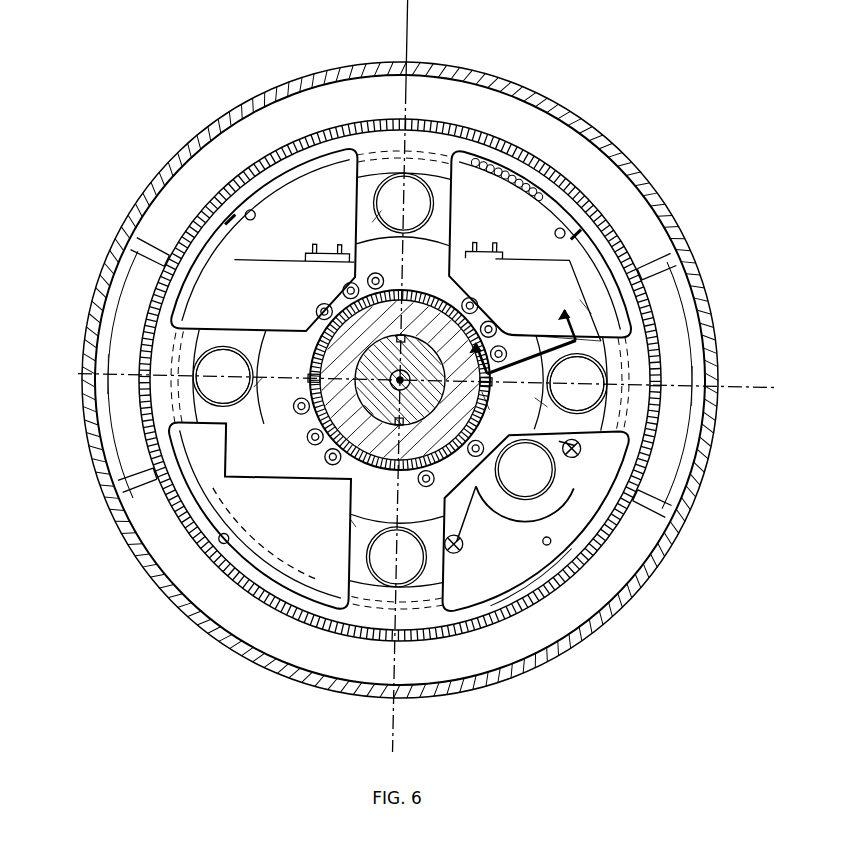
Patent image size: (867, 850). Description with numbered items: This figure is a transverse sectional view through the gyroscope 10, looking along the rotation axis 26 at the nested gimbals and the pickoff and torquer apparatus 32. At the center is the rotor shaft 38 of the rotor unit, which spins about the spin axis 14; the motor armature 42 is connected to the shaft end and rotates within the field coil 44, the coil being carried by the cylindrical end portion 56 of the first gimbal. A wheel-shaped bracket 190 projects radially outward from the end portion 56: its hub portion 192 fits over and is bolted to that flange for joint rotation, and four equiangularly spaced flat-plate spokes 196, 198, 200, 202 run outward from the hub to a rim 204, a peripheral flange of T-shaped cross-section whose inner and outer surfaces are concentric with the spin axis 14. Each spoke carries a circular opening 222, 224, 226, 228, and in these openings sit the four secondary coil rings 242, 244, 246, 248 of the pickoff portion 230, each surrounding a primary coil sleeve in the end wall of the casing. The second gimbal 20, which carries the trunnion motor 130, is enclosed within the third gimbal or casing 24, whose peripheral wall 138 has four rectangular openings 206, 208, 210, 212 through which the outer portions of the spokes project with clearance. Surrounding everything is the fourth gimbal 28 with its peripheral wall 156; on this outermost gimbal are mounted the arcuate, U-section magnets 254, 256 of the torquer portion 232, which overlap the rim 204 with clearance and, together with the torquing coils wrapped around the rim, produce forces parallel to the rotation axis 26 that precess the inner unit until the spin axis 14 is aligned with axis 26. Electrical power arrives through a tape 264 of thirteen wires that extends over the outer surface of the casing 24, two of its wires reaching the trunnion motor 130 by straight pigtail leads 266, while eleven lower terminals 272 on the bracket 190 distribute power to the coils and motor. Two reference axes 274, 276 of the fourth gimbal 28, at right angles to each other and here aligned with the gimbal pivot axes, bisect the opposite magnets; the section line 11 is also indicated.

The gyroscope 10 is at (690, 162).
The section line 11- 11 is at (516, 330).
The spin axis 14 is at (400, 380).
The second gimbal 20 is at (267, 466).
The third gimbal or casing 24 is at (531, 586).
The rotation axis 26 is at (400, 380).
The fourth gimbal 28 is at (249, 205).
The pickoff and torquer apparatus 32 is at (401, 380).
The shaft 38 is at (391, 387).
The armature 42 is at (412, 407).
The coil 44 is at (411, 329).
The end portion 56 is at (412, 389).
The motor 130 is at (513, 496).
The peripheral wall 138 is at (263, 531).
The peripheral wall 156 is at (405, 410).
The wheel-shaped bracket 190 is at (557, 326).
The hub portion 192 is at (501, 411).
The spoke 196 is at (99, 462).
The spoke 198 is at (695, 297).
The spoke 200 is at (530, 215).
The spoke 202 is at (519, 551).
The rim 204 is at (176, 195).
The rectangular opening 206 is at (264, 239).
The rectangular opening 208 is at (558, 289).
The rectangular opening 210 is at (539, 246).
The rectangular opening 212 is at (259, 515).
The circular opening 222 is at (222, 376).
The circular opening 224 is at (576, 383).
The circular opening 226 is at (403, 202).
The circular opening 228 is at (396, 556).
The pickoff portion 230 is at (399, 380).
The torquer portion 232 is at (403, 369).
The secondary coil ring 242 is at (281, 373).
The secondary coil ring 244 is at (552, 416).
The secondary coil ring 246 is at (348, 214).
The secondary coil ring 248 is at (333, 522).
The magnet 254 is at (108, 282).
The magnet 256 is at (691, 472).
The tape 264 is at (520, 166).
The pigtail leads 266 is at (418, 280).
The lower terminals 272 is at (400, 375).
The reference axis 274 is at (432, 364).
The reference axis 276 is at (429, 376).